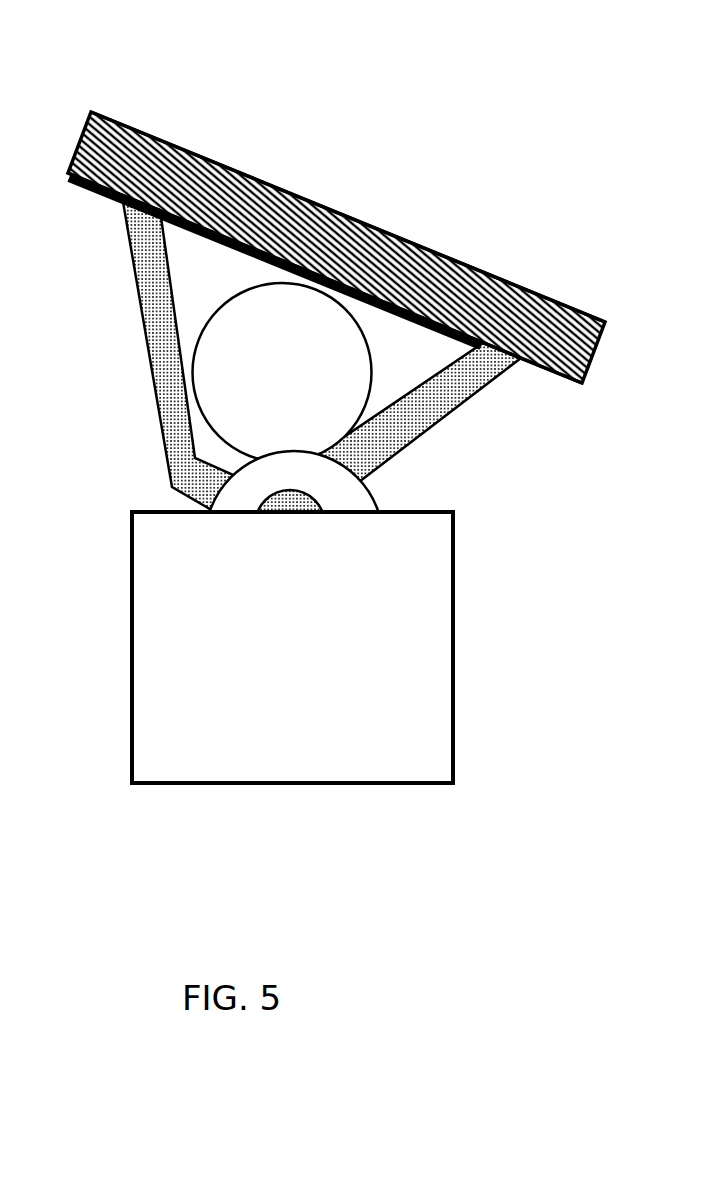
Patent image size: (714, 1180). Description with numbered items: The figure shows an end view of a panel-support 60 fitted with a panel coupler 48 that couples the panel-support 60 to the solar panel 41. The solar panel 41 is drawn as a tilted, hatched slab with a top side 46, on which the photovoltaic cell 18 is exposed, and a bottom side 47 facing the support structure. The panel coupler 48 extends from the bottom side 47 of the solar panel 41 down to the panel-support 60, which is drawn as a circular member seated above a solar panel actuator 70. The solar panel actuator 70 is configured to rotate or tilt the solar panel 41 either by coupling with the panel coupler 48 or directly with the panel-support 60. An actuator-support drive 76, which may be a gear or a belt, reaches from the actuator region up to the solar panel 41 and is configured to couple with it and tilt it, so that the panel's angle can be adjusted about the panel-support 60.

The photovoltaic cell 18 is at (344, 211).
The solar panel 41 is at (238, 204).
The top side 46 is at (130, 117).
The bottom side 47 is at (80, 192).
The panel coupler 48 is at (167, 420).
The panel-support 60 is at (282, 372).
The solar panel actuator 70 is at (168, 577).
The actuator-support drive 76 is at (358, 503).